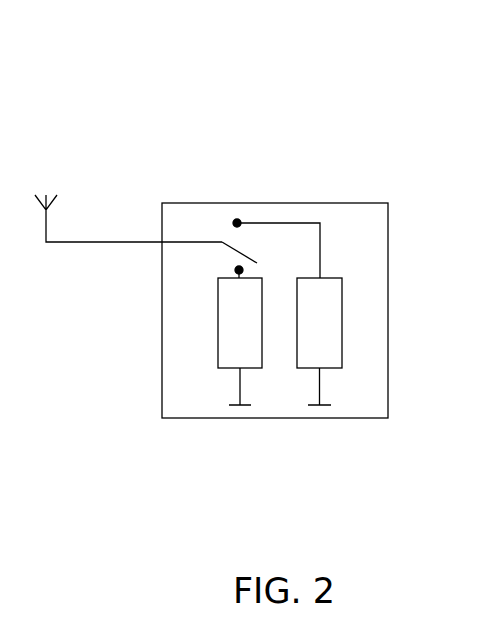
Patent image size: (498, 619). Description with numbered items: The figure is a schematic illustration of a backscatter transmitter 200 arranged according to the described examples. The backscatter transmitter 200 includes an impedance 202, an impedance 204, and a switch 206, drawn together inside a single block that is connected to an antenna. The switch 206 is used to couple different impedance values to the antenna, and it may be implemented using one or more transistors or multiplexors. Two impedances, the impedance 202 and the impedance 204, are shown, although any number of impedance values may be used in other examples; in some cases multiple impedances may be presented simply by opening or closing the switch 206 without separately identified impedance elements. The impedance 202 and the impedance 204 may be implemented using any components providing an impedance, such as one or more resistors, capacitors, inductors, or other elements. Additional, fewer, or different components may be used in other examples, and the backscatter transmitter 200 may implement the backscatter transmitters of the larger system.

The backscatter transmitter 200 is at (391, 60).
The impedance 202 is at (218, 355).
The impedance 204 is at (342, 353).
The switch 206 is at (187, 246).